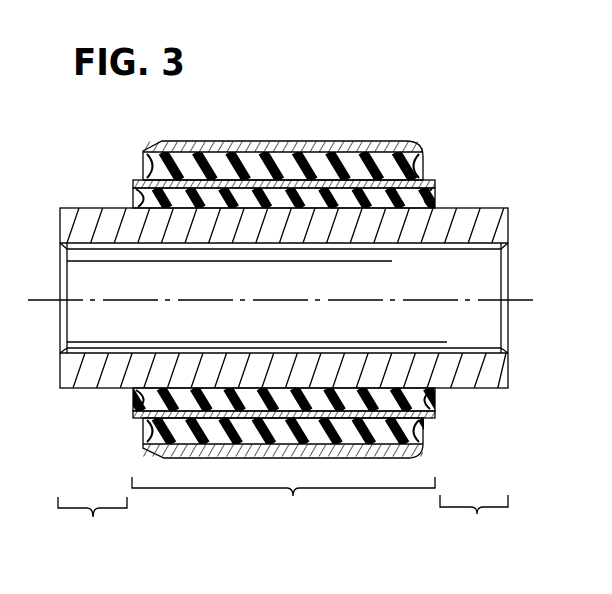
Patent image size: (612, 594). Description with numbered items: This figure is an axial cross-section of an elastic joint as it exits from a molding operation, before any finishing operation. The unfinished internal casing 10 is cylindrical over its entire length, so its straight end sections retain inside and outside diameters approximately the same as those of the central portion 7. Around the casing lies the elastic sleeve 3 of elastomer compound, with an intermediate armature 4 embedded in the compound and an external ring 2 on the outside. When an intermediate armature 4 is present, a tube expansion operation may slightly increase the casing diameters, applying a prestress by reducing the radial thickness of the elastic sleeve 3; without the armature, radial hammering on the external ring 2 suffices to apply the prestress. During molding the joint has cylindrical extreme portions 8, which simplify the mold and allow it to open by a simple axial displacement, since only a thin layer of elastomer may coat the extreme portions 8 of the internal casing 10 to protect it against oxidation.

The external ring 2 is at (271, 141).
The elastic sleeve 3 is at (150, 395).
The intermediate armature 4 is at (423, 430).
The central portion 7 is at (283, 503).
The extreme portions 8 is at (283, 522).
The internal casing 10 is at (418, 227).